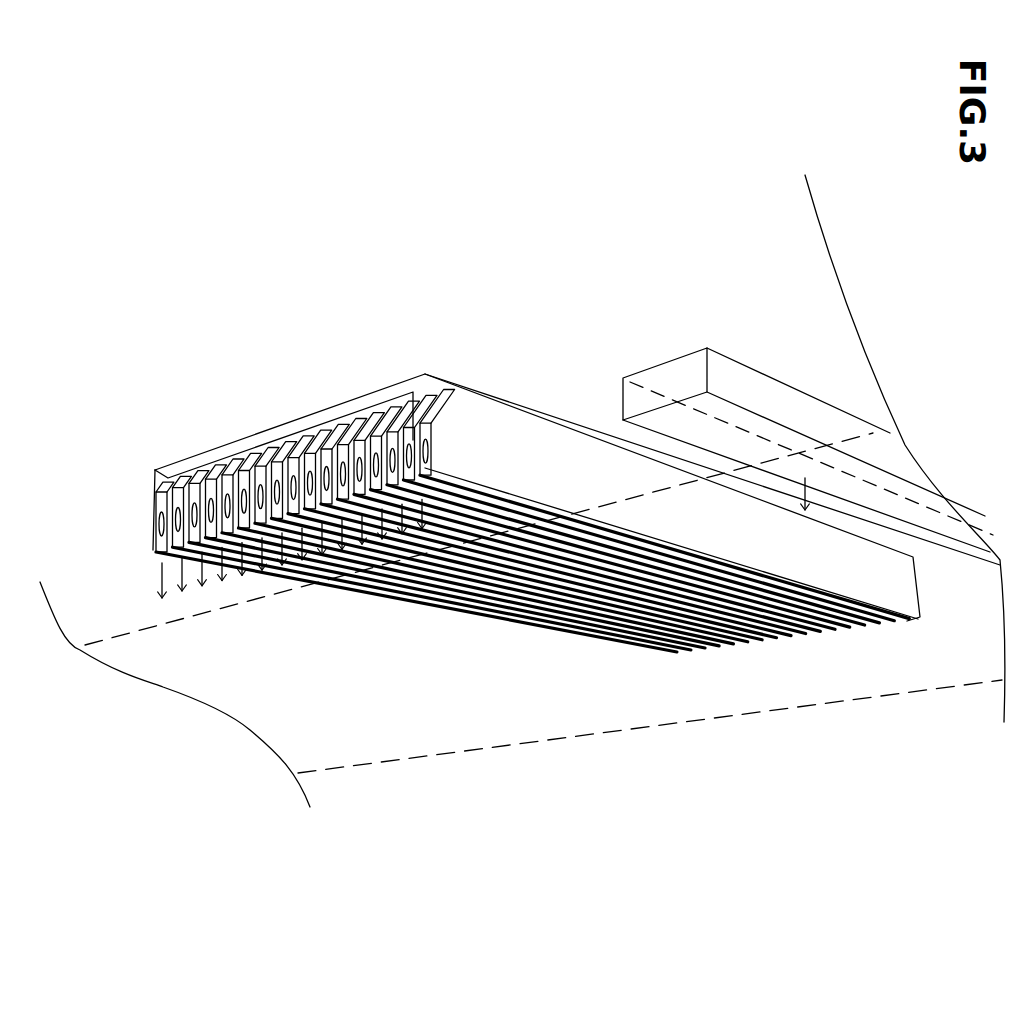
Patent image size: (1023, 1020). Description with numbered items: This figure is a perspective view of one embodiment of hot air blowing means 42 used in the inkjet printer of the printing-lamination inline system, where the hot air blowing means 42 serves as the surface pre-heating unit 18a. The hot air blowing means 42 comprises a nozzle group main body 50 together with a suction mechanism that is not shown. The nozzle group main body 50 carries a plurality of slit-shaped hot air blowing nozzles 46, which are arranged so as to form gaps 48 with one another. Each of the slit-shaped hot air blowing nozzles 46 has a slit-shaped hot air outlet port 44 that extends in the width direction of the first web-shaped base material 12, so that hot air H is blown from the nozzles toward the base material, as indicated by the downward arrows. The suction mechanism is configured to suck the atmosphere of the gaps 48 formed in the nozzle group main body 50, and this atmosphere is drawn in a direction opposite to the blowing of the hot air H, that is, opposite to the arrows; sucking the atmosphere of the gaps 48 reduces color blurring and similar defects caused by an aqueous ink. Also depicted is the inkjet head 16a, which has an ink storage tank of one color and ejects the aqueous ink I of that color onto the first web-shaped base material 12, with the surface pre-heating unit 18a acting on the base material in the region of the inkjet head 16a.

The first web-shaped base material 12 is at (236, 722).
The inkjet head 16a is at (678, 372).
The surface pre-heating unit 18a is at (378, 230).
The hot air blowing means 42 is at (506, 348).
The slit-shaped hot air outlet port 44 is at (401, 486).
The slit-shaped hot air blowing nozzles 46 is at (394, 424).
The gaps 48 is at (208, 484).
The nozzle group main body 50 is at (922, 628).
The hot air H is at (160, 571).
The aqueous ink I is at (810, 488).